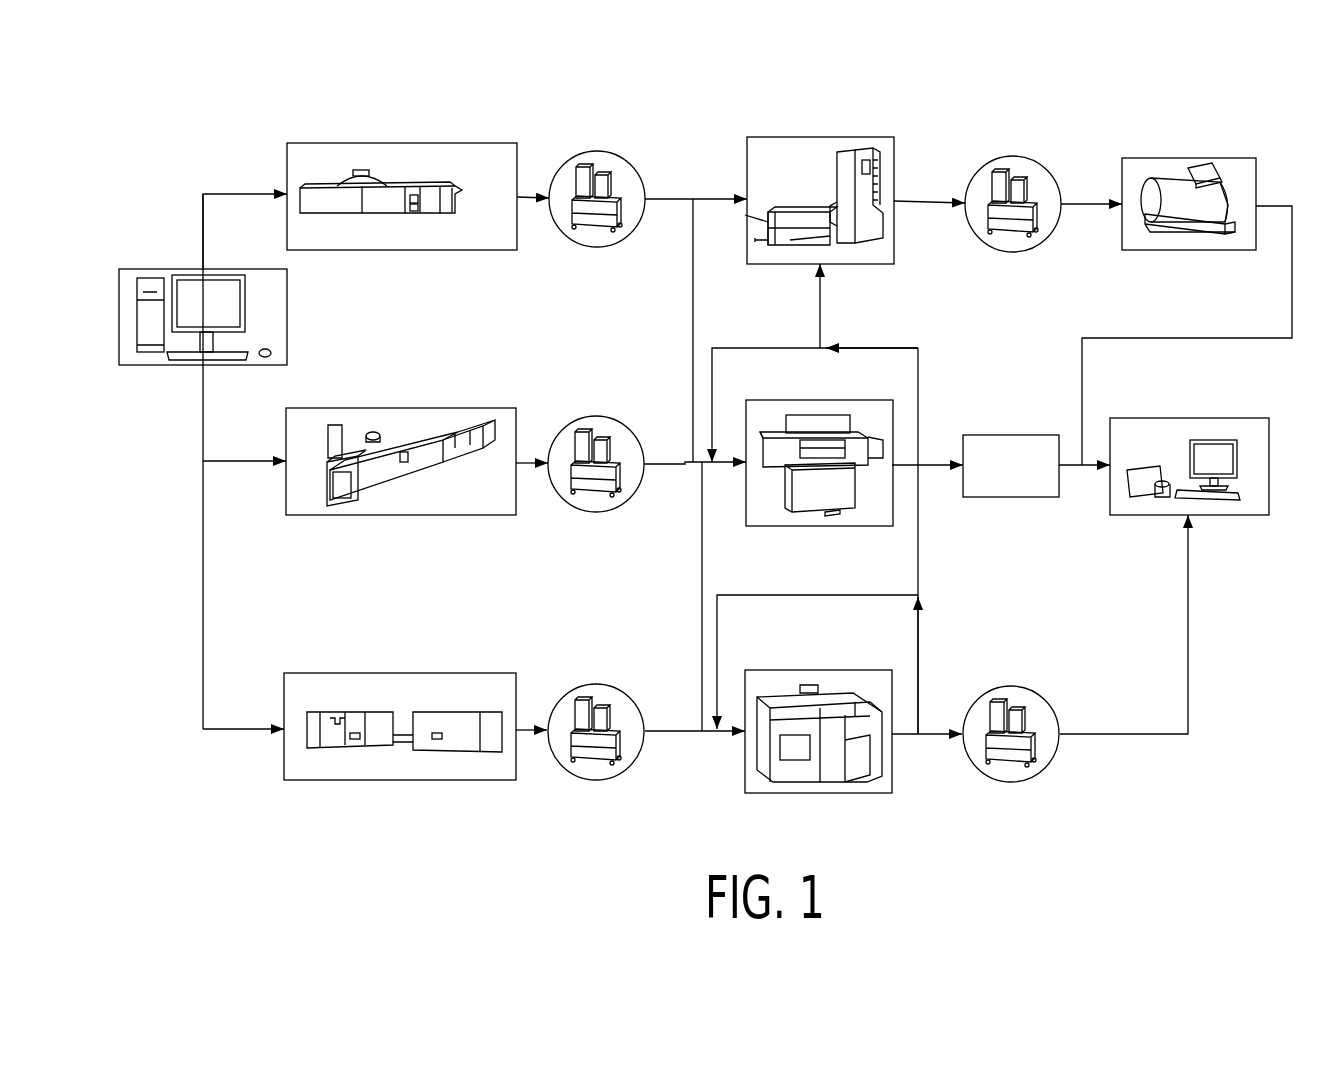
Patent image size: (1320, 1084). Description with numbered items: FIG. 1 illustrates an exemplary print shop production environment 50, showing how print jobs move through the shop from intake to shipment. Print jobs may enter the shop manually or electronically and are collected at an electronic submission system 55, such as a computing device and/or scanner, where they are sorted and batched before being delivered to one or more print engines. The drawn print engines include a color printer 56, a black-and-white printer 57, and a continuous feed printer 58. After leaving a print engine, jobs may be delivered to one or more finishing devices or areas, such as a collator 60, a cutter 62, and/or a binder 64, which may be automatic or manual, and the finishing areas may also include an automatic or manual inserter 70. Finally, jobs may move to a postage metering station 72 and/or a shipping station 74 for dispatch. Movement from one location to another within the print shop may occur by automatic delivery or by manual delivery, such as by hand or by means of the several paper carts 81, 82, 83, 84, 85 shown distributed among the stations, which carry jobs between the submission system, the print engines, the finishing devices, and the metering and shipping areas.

The production environment 50 is at (233, 130).
The electronic submission system 55 is at (153, 365).
The color printer 56 is at (423, 250).
The black-and-white printer 57 is at (420, 515).
The continuous feed printer 58 is at (420, 780).
The collator 60 is at (830, 264).
The cutter 62 is at (830, 526).
The binder 64 is at (830, 793).
The inserter 70 is at (1008, 497).
The postage metering station 72 is at (1185, 250).
The shipping station 74 is at (1218, 515).
The paper cart 81 is at (597, 247).
The paper cart 82 is at (596, 512).
The paper cart 83 is at (596, 780).
The paper cart 84 is at (1012, 252).
The paper cart 85 is at (1010, 782).